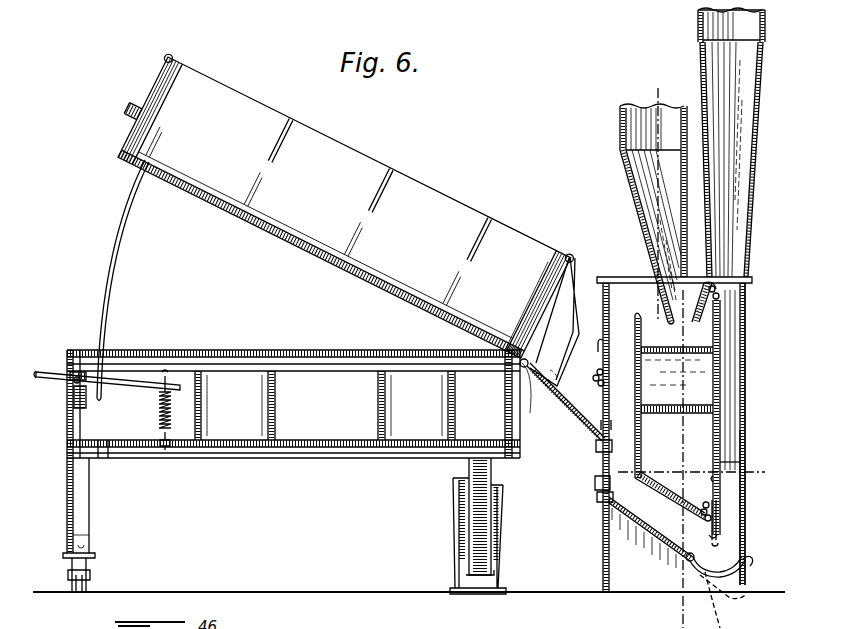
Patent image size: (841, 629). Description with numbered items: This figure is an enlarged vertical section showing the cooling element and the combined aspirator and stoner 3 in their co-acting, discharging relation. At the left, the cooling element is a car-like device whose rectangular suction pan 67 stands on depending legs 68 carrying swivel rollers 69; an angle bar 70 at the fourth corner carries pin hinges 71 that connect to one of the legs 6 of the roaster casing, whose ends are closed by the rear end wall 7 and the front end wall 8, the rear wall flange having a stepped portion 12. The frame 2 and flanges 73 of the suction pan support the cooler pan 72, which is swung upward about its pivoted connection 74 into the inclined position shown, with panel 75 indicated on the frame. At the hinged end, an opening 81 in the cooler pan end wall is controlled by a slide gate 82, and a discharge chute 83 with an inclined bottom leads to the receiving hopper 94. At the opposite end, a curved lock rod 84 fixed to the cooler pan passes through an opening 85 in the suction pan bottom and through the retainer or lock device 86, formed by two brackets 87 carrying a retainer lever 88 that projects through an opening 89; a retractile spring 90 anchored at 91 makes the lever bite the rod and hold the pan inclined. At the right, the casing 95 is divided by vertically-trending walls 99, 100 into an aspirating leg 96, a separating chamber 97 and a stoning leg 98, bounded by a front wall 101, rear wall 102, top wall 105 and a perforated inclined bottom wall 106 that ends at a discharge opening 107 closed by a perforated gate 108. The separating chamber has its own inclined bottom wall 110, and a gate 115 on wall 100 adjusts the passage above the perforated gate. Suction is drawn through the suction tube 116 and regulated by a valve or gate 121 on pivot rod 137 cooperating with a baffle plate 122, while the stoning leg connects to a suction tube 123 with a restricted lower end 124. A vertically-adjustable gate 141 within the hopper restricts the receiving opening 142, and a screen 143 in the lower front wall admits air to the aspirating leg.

The frame 2 is at (370, 456).
The combined aspirator and stoner 3 is at (746, 441).
The legs 6 is at (500, 510).
The rear end wall 7 is at (654, 194).
The front end wall 8 is at (671, 459).
The stepped portion 12 is at (120, 158).
The suction pan 67 is at (300, 452).
The depending legs 68 is at (84, 515).
The swivel rollers 69 is at (92, 565).
The angle bar 70 is at (478, 512).
The pin hinges 71 is at (469, 557).
The cooler pan 72 is at (274, 216).
The flanges 73 is at (352, 372).
The pivoted connection 74 is at (562, 400).
The frame panel 75 is at (372, 420).
The opening 81 is at (535, 335).
The slide gate 82 is at (530, 298).
The discharge chute 83 is at (586, 418).
The lock rod 84 is at (108, 284).
The opening 85 is at (103, 446).
The retainer or lock device 86 is at (72, 384).
The brackets 87 is at (87, 408).
The retainer or lock lever 88 is at (132, 383).
The opening 89 is at (72, 374).
The retractile spring 90 is at (175, 412).
The spring fastening 91 is at (176, 448).
The receiving hopper 94 is at (584, 352).
The casing 95 is at (746, 376).
The aspirating leg 96 is at (618, 450).
The separating chamber 97 is at (700, 362).
The stoning leg 98 is at (731, 410).
The vertically-trending wall 99 is at (630, 462).
The vertically-trending wall 100 is at (742, 462).
The front wall 101 is at (603, 292).
The rear wall 102 is at (746, 494).
The top wall 105 is at (625, 280).
The perforated inclined bottom wall 106 is at (650, 535).
The discharge opening 107 is at (728, 560).
The perforated gate 108 is at (722, 600).
The inclined bottom wall 110 is at (675, 441).
The gate 115 is at (722, 534).
The suction tube 116 is at (633, 129).
The valve or gate 121 is at (700, 311).
The baffle plate 122 is at (668, 316).
The suction tube 123 is at (703, 29).
The restricted lower end 124 is at (735, 246).
The pivot rod 137 is at (716, 291).
The vertically-adjustable gate 141 is at (600, 450).
The receiving opening 142 is at (685, 391).
The screen 143 is at (598, 492).